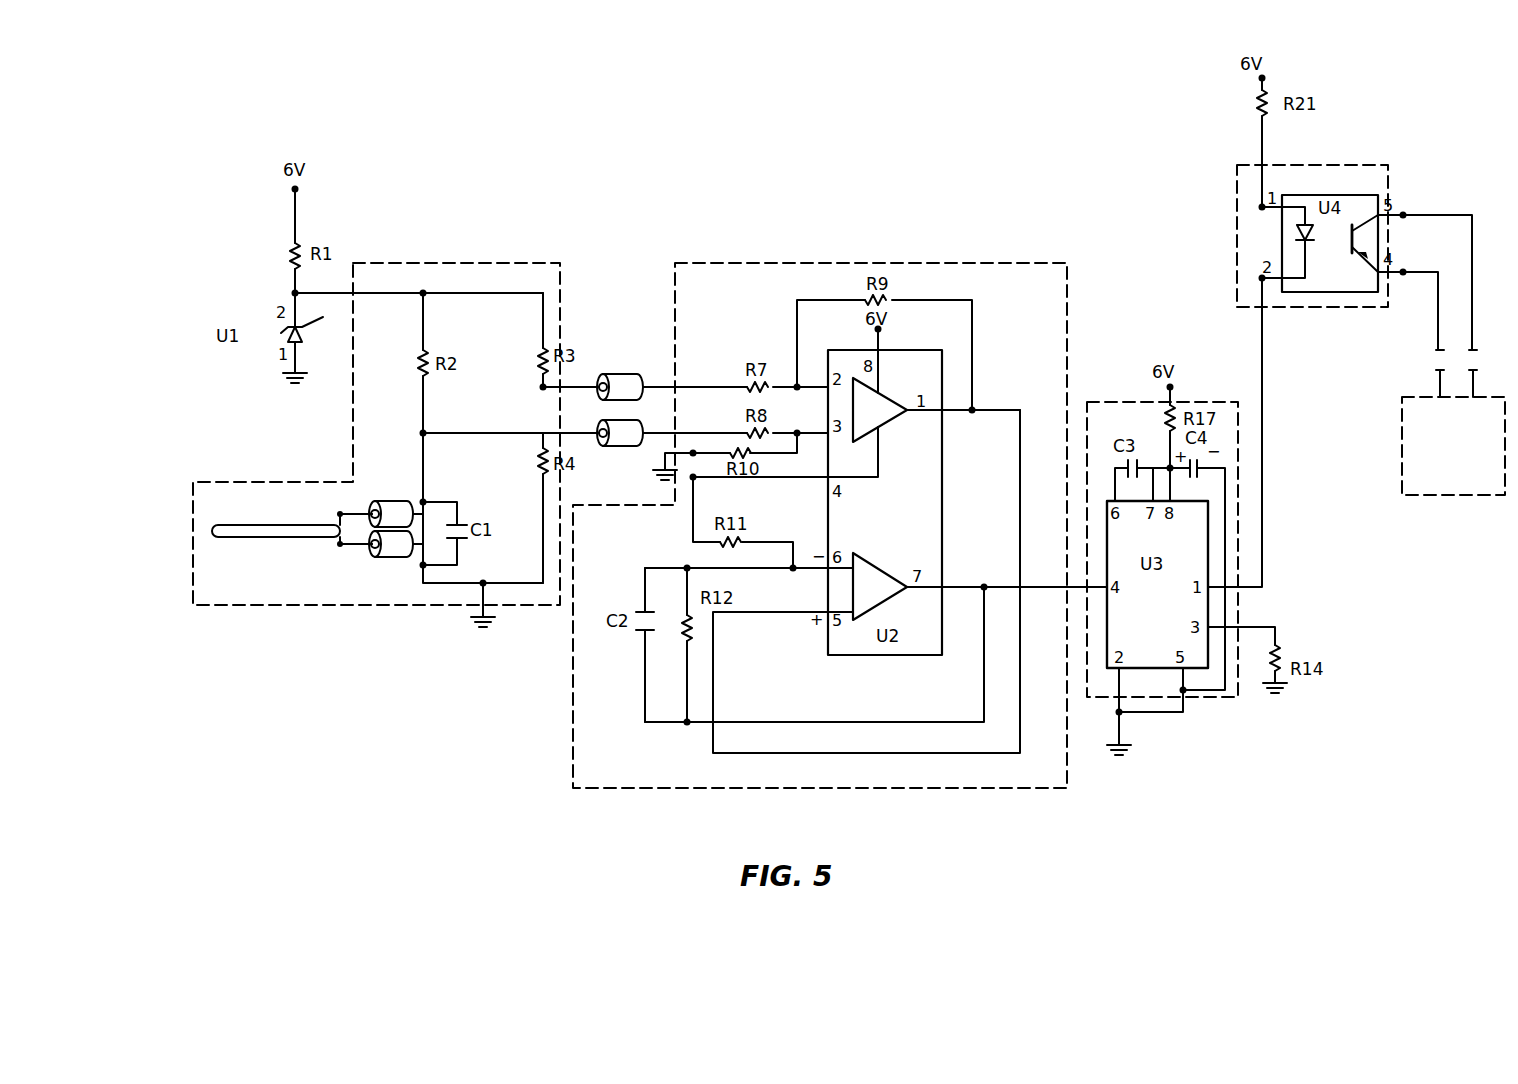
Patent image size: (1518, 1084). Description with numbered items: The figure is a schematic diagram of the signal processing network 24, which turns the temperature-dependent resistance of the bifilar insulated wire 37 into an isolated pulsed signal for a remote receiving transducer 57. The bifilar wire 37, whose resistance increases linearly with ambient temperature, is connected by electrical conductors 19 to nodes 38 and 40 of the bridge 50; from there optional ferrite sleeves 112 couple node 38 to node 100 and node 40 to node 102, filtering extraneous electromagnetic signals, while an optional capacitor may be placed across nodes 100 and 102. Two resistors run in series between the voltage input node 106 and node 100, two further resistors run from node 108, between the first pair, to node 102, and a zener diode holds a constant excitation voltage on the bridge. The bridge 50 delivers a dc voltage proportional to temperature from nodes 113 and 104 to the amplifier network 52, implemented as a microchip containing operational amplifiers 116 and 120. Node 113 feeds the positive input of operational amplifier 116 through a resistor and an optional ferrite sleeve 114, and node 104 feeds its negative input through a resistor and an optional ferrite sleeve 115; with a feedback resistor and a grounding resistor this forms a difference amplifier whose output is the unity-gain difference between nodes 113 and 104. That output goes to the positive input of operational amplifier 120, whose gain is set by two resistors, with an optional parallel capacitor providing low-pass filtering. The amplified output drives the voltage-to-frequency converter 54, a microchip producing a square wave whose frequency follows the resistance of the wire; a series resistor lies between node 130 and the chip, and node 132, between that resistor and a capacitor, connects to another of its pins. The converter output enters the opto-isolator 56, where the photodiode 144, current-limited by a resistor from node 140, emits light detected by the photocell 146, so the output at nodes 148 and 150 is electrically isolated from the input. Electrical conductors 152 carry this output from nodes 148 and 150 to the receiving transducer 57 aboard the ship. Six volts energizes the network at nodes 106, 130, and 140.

The signal processing network 24 is at (697, 178).
The voltage input node 106 is at (300, 190).
The node 108 is at (425, 292).
The node 104 is at (540, 388).
The node 113 is at (420, 433).
The ferrite sleeve 115 is at (624, 374).
The ferrite sleeve 114 is at (618, 446).
The operational amplifier 116 is at (885, 428).
The operational amplifier 120 is at (885, 566).
The amplifier network 52 is at (1067, 315).
The bridge 50 is at (350, 455).
The ferrite sleeves 112 is at (392, 501).
The node 100 is at (428, 500).
The node 102 is at (422, 568).
The node 38 is at (342, 518).
The electrical conductors 19 is at (362, 546).
The node 40 is at (340, 546).
The bifilar insulated wire 37 is at (236, 538).
The node 130 is at (1175, 386).
The node 132 is at (1167, 466).
The voltage-to-frequency converter 54 is at (1240, 617).
The node 140 is at (1258, 80).
The opto-isolator 56 is at (1235, 178).
The photodiode 144 is at (1295, 230).
The photocell 146 is at (1355, 226).
The node 148 is at (1407, 213).
The electrical conductors 152 is at (1450, 215).
The node 150 is at (1404, 276).
The receiving transducer 57 is at (1400, 452).